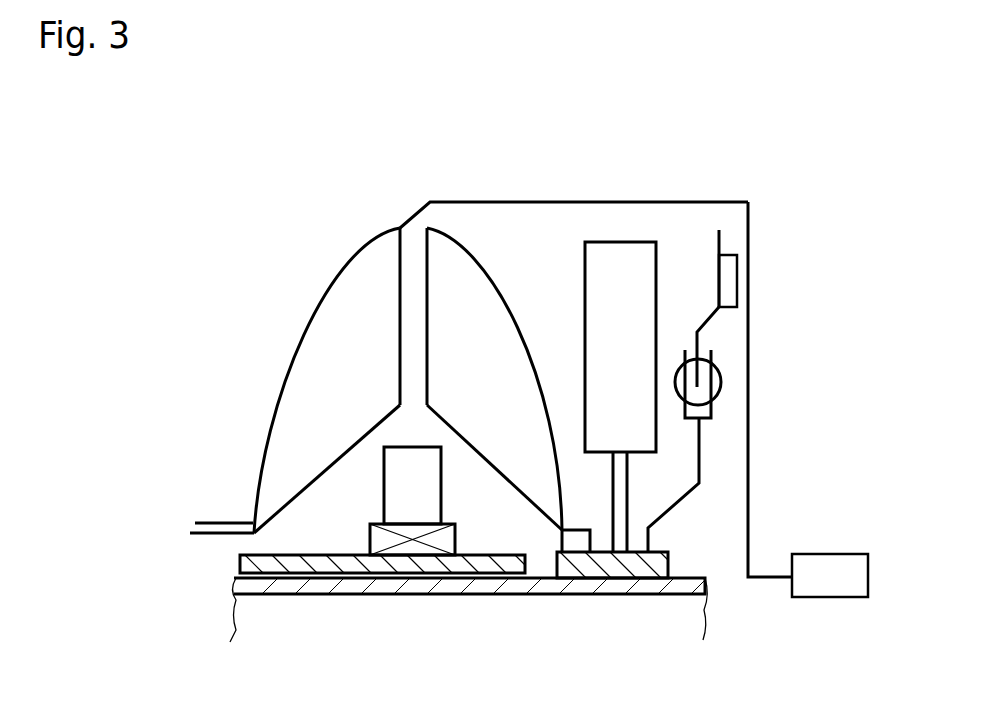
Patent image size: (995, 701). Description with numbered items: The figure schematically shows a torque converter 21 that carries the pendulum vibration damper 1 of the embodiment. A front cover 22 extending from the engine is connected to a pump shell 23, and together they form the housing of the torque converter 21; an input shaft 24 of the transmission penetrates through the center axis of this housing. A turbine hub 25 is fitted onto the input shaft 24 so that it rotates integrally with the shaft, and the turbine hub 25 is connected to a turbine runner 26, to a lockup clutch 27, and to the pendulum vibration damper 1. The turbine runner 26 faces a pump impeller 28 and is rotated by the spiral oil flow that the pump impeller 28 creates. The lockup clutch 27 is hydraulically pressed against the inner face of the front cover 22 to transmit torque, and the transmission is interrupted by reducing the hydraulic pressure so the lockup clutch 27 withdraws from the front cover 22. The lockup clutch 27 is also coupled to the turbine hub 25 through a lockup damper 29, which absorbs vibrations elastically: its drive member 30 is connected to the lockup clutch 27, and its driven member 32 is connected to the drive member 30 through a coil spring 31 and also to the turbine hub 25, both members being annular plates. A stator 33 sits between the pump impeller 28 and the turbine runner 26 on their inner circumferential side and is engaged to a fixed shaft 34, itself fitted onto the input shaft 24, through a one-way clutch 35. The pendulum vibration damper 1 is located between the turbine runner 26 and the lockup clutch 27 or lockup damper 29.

The pendulum vibration damper 1 is at (573, 278).
The torque converter 21 is at (341, 193).
The front cover 22 is at (751, 378).
The pump shell 23 is at (296, 330).
The input shaft 24 is at (707, 592).
The turbine hub 25 is at (601, 572).
The turbine runner 26 is at (455, 255).
The lockup clutch 27 is at (722, 252).
The pump impeller 28 is at (285, 400).
The lockup damper 29 is at (718, 442).
The drive member 30 is at (711, 321).
The coil spring 31 is at (702, 392).
The driven member 32 is at (692, 496).
The stator 33 is at (398, 470).
The fixed shaft 34 is at (246, 563).
The one-way clutch 35 is at (412, 565).